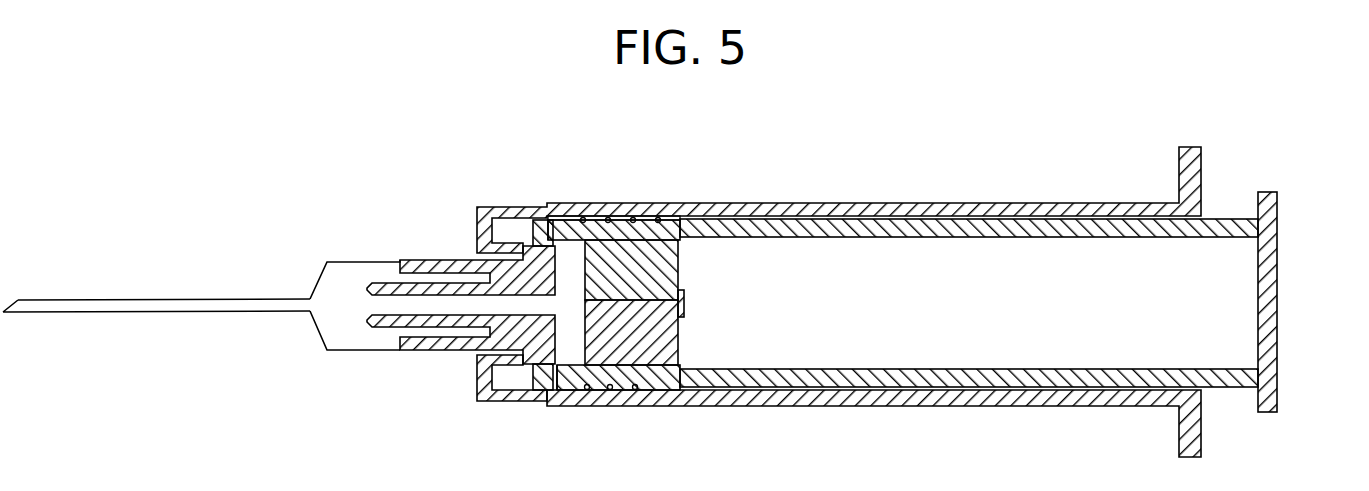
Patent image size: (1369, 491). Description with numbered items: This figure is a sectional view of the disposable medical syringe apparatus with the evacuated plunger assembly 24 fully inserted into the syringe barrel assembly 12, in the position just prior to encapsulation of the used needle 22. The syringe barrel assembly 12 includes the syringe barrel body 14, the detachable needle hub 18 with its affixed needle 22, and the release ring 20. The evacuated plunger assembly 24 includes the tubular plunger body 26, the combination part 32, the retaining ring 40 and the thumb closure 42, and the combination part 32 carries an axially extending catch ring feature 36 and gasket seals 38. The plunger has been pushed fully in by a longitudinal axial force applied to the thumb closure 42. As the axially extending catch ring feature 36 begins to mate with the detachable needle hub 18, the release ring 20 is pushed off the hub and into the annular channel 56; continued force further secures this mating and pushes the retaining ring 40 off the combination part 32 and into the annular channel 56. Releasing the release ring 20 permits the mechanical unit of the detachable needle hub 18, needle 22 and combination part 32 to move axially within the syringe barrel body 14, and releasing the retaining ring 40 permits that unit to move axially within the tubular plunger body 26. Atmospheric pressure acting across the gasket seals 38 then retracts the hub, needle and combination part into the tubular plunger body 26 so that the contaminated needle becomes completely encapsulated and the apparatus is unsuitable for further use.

The syringe barrel assembly 12 is at (797, 211).
The syringe barrel body 14 is at (762, 212).
The detachable needle hub 18 is at (530, 243).
The release ring 20 is at (549, 206).
The needle 22 is at (344, 276).
The evacuated plunger assembly 24 is at (935, 230).
The tubular plunger body 26 is at (858, 232).
The combination part 32 is at (667, 345).
The axially extending catch ring feature 36 is at (590, 222).
The gasket seals 38 is at (664, 220).
The retaining ring 40 is at (566, 218).
The thumb closure 42 is at (1278, 277).
The annular channel 56 is at (510, 383).